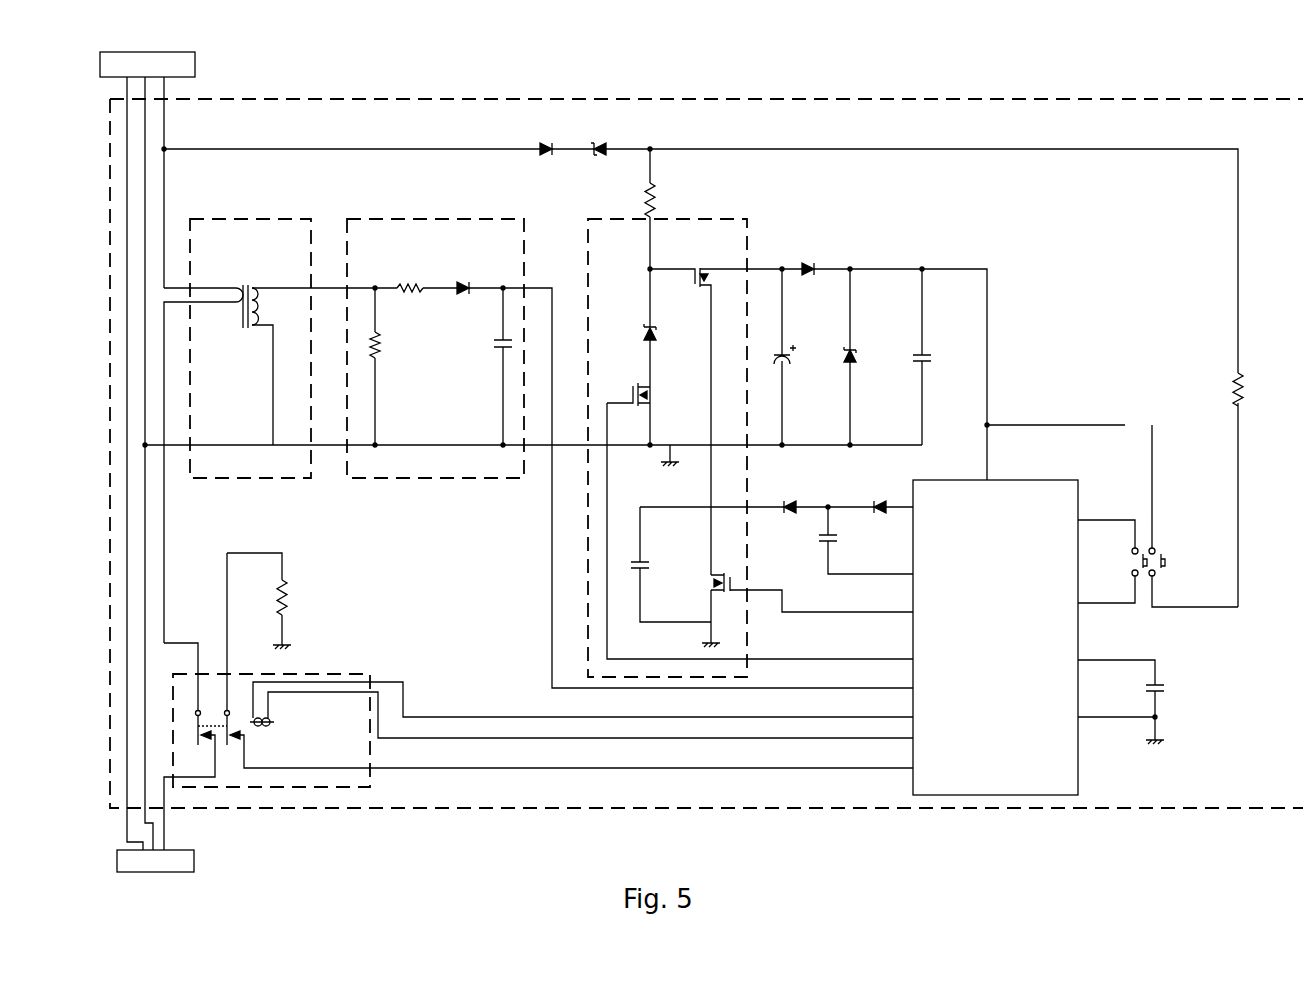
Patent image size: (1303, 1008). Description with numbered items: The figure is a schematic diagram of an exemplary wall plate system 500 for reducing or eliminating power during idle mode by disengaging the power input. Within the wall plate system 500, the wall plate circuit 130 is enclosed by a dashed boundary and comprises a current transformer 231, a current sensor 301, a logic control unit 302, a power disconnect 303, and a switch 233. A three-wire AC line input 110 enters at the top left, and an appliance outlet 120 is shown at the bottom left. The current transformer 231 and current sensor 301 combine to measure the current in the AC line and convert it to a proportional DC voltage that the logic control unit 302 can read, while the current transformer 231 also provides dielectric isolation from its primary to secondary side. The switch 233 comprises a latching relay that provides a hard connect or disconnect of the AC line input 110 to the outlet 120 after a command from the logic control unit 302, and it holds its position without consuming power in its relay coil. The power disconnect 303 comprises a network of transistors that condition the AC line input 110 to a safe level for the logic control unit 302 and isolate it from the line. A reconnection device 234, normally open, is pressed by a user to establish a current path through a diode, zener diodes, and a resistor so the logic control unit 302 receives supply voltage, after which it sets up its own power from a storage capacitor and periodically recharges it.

The AC line input 110 is at (221, 53).
The outlet 120 is at (193, 856).
The wall plate circuit 130 is at (1150, 99).
The current transformer 231 is at (248, 218).
The switch 233 is at (318, 672).
The reconnection device 234 is at (1157, 538).
The current sensor 301 is at (407, 218).
The logic control unit 302 is at (1035, 478).
The power disconnect 303 is at (728, 218).
The wall plate system 500 is at (858, 61).